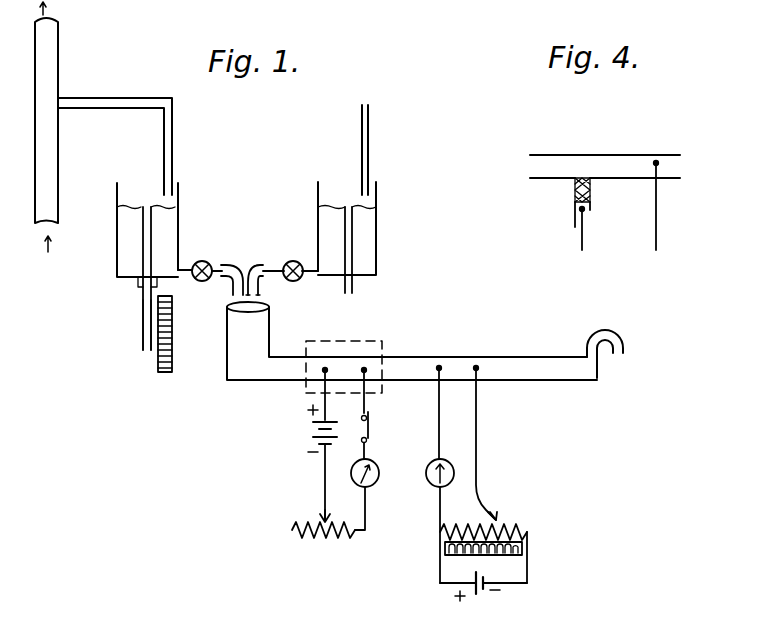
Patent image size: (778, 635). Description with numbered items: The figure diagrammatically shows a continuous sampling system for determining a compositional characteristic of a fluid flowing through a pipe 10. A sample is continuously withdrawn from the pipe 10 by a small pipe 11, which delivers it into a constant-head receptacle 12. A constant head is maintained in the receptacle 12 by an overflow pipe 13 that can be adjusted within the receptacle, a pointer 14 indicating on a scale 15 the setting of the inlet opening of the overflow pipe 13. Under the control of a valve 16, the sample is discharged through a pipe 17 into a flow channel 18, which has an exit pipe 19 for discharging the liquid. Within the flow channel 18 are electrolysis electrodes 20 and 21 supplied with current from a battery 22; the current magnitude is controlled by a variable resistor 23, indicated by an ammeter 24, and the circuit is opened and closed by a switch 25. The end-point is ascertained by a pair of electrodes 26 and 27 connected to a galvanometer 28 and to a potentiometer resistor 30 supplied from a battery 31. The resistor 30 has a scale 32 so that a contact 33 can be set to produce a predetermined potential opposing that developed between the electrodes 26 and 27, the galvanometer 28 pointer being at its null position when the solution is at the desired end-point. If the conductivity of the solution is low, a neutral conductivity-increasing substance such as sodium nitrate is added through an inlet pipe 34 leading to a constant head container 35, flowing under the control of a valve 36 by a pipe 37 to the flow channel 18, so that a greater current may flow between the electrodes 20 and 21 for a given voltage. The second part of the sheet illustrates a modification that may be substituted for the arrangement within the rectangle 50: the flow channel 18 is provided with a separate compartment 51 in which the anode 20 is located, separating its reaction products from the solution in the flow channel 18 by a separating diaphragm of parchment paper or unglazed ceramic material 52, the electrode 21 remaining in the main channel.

In FIG. 1, the pipe 10 is at (58, 45).
In FIG. 1, the small pipe 11 is at (100, 98).
In FIG. 1, the constant-head receptacle 12 is at (178, 195).
In FIG. 1, the overflow pipe 13 is at (143, 240).
In FIG. 1, the pointer 14 is at (150, 325).
In FIG. 1, the scale 15 is at (172, 318).
In FIG. 1, the valve 16 is at (204, 261).
In FIG. 1, the pipe 17 is at (240, 265).
In FIG. 1, the flow channel 18 is at (227, 363).
In FIG. 4, the flow channel 18 is at (548, 166).
In FIG. 1, the exit pipe 19 is at (620, 348).
In FIG. 1, the electrode 20 is at (320, 370).
In FIG. 4, the electrode 20 is at (584, 212).
In FIG. 1, the electrode 21 is at (367, 370).
In FIG. 4, the electrode 21 is at (652, 164).
In FIG. 1, the battery 22 is at (310, 438).
In FIG. 1, the variable resistor 23 is at (346, 540).
In FIG. 1, the ammeter 24 is at (379, 470).
In FIG. 1, the switch 25 is at (369, 432).
In FIG. 1, the electrode 26 is at (434, 368).
In FIG. 1, the electrode 27 is at (472, 368).
In FIG. 1, the galvanometer 28 is at (426, 487).
In FIG. 1, the potentiometer resistor 30 is at (512, 524).
In FIG. 1, the battery 31 is at (484, 596).
In FIG. 1, the scale 32 is at (500, 556).
In FIG. 1, the contact 33 is at (484, 515).
In FIG. 1, the inlet pipe 34 is at (368, 156).
In FIG. 1, the constant head container 35 is at (376, 250).
In FIG. 1, the valve 36 is at (290, 261).
In FIG. 1, the pipe 37 is at (264, 294).
In FIG. 1, the rectangle 50 is at (315, 341).
In FIG. 4, the compartment 51 is at (572, 220).
In FIG. 4, the unglazed ceramic material 52 is at (574, 185).